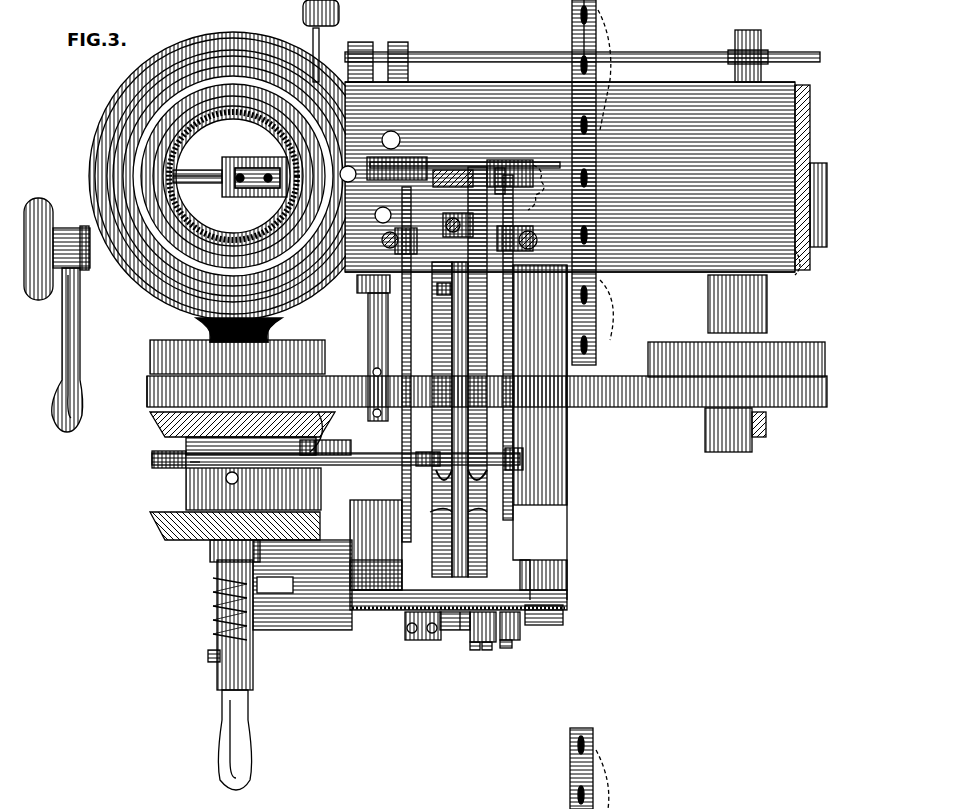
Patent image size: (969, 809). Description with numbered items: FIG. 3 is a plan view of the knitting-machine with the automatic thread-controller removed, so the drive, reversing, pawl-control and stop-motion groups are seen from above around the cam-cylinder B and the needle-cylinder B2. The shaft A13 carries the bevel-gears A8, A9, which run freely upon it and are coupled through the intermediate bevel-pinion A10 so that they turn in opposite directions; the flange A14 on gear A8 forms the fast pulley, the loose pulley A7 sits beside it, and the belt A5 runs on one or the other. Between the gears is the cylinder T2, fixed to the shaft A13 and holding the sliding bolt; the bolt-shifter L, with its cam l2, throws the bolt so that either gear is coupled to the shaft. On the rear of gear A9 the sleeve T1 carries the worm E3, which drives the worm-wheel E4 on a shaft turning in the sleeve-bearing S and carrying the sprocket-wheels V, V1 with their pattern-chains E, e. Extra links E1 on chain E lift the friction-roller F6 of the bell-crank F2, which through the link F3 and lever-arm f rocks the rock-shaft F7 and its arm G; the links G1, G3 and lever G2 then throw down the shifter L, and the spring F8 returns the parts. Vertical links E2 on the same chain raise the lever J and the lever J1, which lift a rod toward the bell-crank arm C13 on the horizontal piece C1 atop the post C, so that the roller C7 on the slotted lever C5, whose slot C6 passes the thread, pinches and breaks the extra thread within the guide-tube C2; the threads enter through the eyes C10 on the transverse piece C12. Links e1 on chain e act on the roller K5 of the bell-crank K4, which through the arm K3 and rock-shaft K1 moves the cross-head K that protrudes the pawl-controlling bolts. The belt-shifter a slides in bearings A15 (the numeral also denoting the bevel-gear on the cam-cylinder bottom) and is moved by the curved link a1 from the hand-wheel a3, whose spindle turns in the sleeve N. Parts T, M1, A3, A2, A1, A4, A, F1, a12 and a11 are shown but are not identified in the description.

The cam-cylinder B is at (233, 187).
The hub T is at (212, 340).
The roller C7 is at (240, 158).
The needle-cylinder B2 is at (200, 170).
The guide-tube C2 is at (200, 183).
The lever C5 is at (240, 183).
The slot C6 is at (269, 183).
The hand-wheel a3 is at (40, 206).
The longitudinal sleeve N is at (100, 262).
The eyes C10 is at (598, 115).
The transverse piece C12 is at (572, 25).
The top rod M1 is at (380, 105).
The bolt A3 is at (815, 140).
The end plate A2 is at (818, 162).
The hub A1 is at (808, 262).
The bracket A4 is at (801, 279).
The belt A5 is at (628, 407).
The gear A is at (732, 452).
The loose pulley A7 is at (150, 350).
The annular rim or flange A14 is at (147, 385).
The bevel-gear A8 is at (150, 422).
The link G3 is at (185, 455).
The lever G2 is at (289, 440).
The bolt-shifter L is at (152, 458).
The cam l2 is at (190, 470).
The cylinder T2 is at (190, 488).
The bevel-gear A9 is at (150, 526).
The sleeve T1 is at (215, 545).
The worm-wheel E4 is at (218, 590).
The worm E3 is at (213, 620).
The shaft A13 is at (222, 698).
The sleeve-bearing S is at (320, 632).
The bevel-gear A15 is at (360, 293).
The rock-shaft K1 is at (374, 342).
The belt-shifter a is at (402, 352).
The horizontal lever J is at (494, 352).
The curved link a1 is at (452, 290).
The horizontal lever J1 is at (476, 268).
The rock-shaft F7 is at (513, 423).
The lever F1 is at (440, 172).
The vertical post C is at (453, 165).
The lever-arm f is at (512, 160).
The horizontal piece C1 is at (544, 179).
The bell-crank arm C13 is at (459, 213).
The cross-head K is at (430, 218).
The arm K3 is at (440, 520).
The fork a12 is at (452, 510).
The fork a11 is at (469, 526).
The bell-crank lever K4 is at (382, 612).
The link F3 is at (567, 575).
The bell-crank lever F2 is at (548, 628).
The spring F8 is at (520, 630).
The friction-roller F6 is at (495, 635).
The friction-roller K5 is at (425, 640).
The laterally-projecting links e1 is at (420, 645).
The pattern-chain e is at (436, 645).
The sprocket-wheel V is at (455, 632).
The sprocket-wheel V1 is at (468, 632).
The pattern-chain E is at (470, 658).
The vertically-projecting links E2 is at (486, 656).
The laterally-projecting extra links E1 is at (505, 659).
The bevel-pinion A10 is at (345, 428).
The link G1 is at (324, 446).
The rocking arm G is at (427, 452).